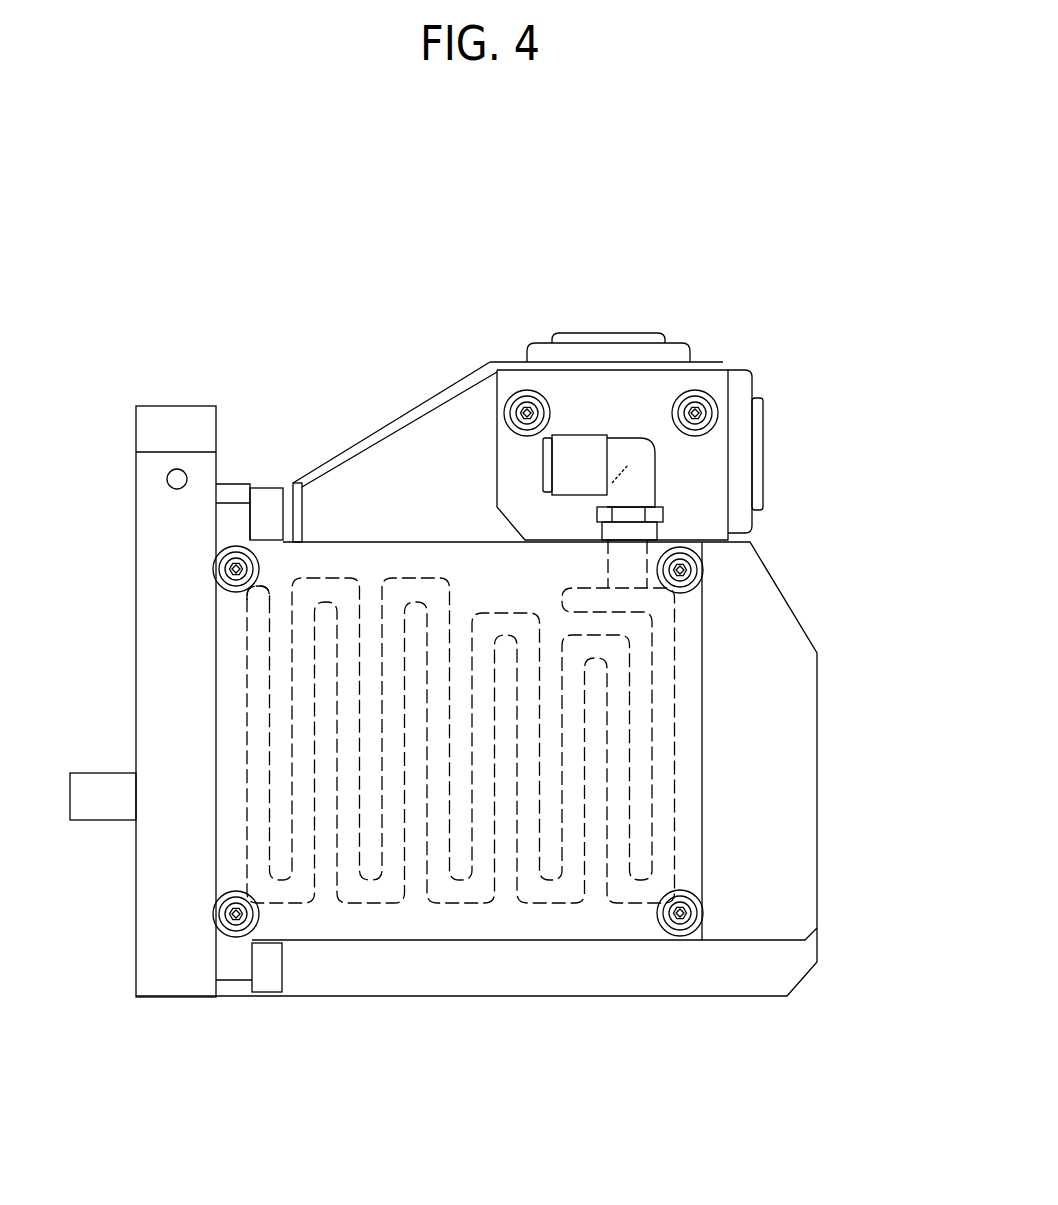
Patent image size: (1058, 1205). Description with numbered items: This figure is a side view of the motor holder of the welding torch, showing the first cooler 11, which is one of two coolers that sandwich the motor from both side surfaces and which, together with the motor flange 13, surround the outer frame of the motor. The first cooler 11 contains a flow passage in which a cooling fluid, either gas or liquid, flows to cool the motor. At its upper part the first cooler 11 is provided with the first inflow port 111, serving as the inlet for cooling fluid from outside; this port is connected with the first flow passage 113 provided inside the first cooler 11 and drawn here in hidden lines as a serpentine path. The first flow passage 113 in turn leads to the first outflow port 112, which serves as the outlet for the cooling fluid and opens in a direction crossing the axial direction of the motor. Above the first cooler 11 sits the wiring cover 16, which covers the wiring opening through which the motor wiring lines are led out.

The first cooler 11 is at (813, 797).
The motor flange 13 is at (147, 957).
The wiring cover 16 is at (711, 361).
The first inflow port 111 is at (537, 466).
The first outflow port 112 is at (261, 577).
The first flow passage 113 is at (445, 906).